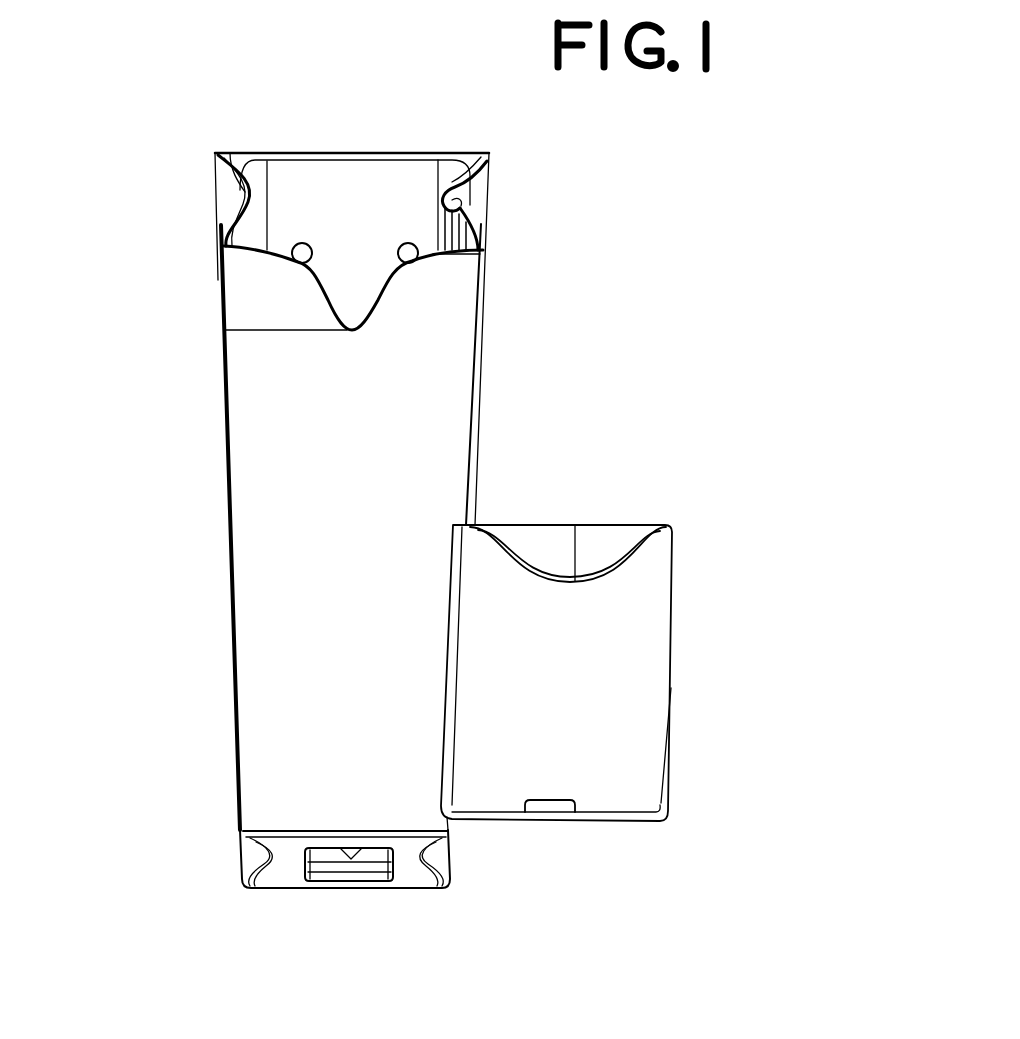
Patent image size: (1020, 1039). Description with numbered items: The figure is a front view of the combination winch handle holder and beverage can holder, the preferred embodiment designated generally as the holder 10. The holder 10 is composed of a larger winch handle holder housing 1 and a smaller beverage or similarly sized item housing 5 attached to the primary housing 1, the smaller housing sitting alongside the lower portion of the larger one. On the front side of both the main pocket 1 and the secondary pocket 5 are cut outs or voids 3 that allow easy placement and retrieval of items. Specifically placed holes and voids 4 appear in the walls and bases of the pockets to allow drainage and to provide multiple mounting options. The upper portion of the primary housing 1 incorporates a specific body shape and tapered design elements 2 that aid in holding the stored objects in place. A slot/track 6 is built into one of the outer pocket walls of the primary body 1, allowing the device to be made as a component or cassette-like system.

The winch handle holder housing 1 is at (320, 548).
The tapered design elements 2 is at (242, 203).
The cut outs or voids 3 is at (345, 329).
The holes and voids 4 is at (404, 245).
The beverage or similarly sized item housing 5 is at (570, 688).
The slot/track 6 is at (450, 201).
The sailboat winch handle holder and beverage or similarly-sized item holder 10 is at (142, 92).